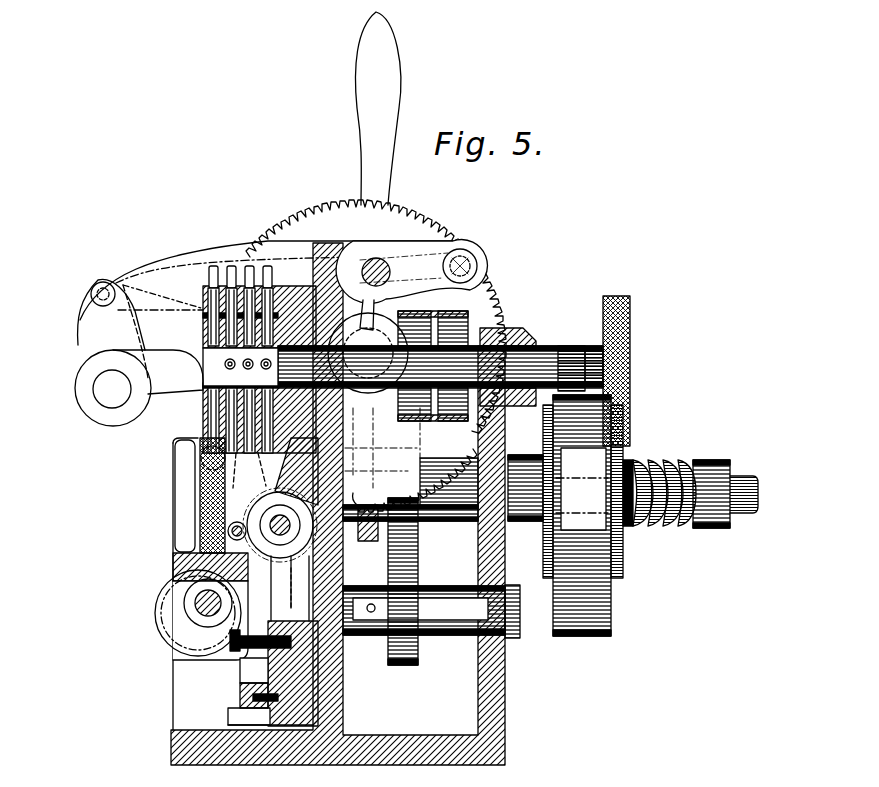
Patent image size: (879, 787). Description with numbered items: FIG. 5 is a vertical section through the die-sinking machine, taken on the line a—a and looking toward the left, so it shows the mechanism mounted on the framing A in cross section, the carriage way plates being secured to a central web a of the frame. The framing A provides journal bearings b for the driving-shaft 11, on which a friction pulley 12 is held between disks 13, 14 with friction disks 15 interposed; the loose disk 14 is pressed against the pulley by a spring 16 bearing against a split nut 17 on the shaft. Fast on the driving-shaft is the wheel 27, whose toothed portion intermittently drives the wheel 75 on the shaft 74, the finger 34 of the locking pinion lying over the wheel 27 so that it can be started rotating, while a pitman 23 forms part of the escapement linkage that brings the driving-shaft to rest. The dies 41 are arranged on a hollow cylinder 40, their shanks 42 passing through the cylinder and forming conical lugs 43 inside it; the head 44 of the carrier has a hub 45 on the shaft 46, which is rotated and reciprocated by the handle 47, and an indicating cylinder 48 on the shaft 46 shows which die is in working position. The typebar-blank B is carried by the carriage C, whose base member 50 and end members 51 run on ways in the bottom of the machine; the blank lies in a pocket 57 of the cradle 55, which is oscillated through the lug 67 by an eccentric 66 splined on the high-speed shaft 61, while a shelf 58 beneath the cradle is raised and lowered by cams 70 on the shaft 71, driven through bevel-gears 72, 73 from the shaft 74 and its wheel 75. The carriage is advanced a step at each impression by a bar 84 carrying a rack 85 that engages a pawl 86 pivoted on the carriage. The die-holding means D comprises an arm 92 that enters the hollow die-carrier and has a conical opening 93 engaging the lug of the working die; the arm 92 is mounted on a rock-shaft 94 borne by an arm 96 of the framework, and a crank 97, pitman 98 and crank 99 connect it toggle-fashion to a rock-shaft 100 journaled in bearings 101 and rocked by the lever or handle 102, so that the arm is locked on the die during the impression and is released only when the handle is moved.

The driving-shaft 11 is at (733, 505).
The friction pulley 12 is at (567, 627).
The disk 13 is at (538, 513).
The loose disk 14 is at (623, 450).
The friction disks 15 is at (543, 572).
The spring 16 is at (657, 453).
The split nut 17 is at (708, 450).
The pitman 23 is at (410, 540).
The wheel 27 is at (400, 518).
The finger 34 is at (375, 492).
The hollow cylinder 40 is at (182, 270).
The dies 41 is at (204, 258).
The shanks 42 is at (158, 262).
The lugs 43 is at (197, 322).
The head 44 is at (290, 262).
The hub 45 is at (303, 262).
The shaft 46 is at (543, 333).
The handle 47 is at (608, 290).
The indicating cylinder 48 is at (468, 282).
The base member 50 is at (310, 653).
The end members 51 is at (183, 470).
The cradle 55 is at (200, 460).
The pocket 57 is at (197, 518).
The shelf 58 is at (187, 558).
The shaft 61 is at (283, 580).
The eccentric 66 is at (370, 535).
The lug 67 is at (242, 500).
The cams 70 is at (173, 600).
The shaft 71 is at (182, 588).
The bevel-gear 72 is at (158, 595).
The bevel-gear 73 is at (165, 638).
The shaft 74 is at (503, 613).
The wheel 75 is at (410, 650).
The bar 84 is at (240, 695).
The rack 85 is at (220, 673).
The pawl 86 is at (247, 662).
The arm 92 is at (178, 365).
The opening 93 is at (197, 398).
The rock-shaft 94 is at (112, 386).
The arm 96 is at (97, 329).
The crank 97 is at (83, 305).
The pitman 98 is at (203, 298).
The crank 99 is at (410, 243).
The rock-shaft 100 is at (376, 258).
The bearings 101 is at (350, 245).
The lever or handle 102 is at (358, 88).
The central web a is at (336, 590).
The journal bearings b is at (500, 453).
The framing A is at (500, 702).
The typebar-blank B is at (100, 472).
The carriage C is at (163, 528).
The die-holding means D is at (95, 423).